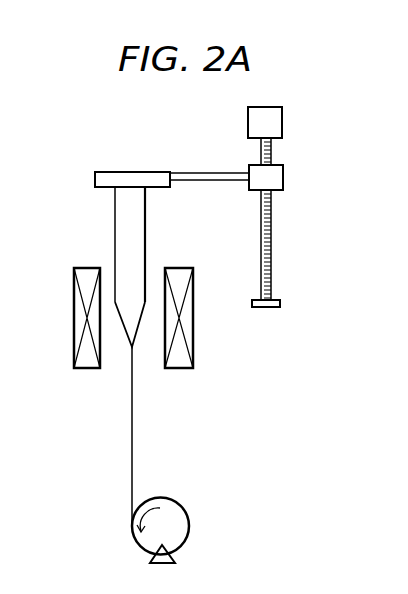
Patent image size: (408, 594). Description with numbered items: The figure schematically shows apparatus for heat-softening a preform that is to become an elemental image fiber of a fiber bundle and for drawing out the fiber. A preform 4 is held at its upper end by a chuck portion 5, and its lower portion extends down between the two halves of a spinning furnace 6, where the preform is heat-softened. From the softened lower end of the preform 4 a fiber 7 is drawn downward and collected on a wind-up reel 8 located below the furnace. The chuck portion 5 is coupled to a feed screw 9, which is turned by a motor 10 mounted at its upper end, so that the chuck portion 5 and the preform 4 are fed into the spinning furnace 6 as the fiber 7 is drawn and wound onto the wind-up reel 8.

The preform 4 is at (122, 222).
The chuck portion 5 is at (131, 180).
The spinning furnace 6 is at (78, 320).
The fiber 7 is at (134, 428).
The wind-up reel 8 is at (180, 519).
The feed screw 9 is at (274, 240).
The motor 10 is at (272, 127).